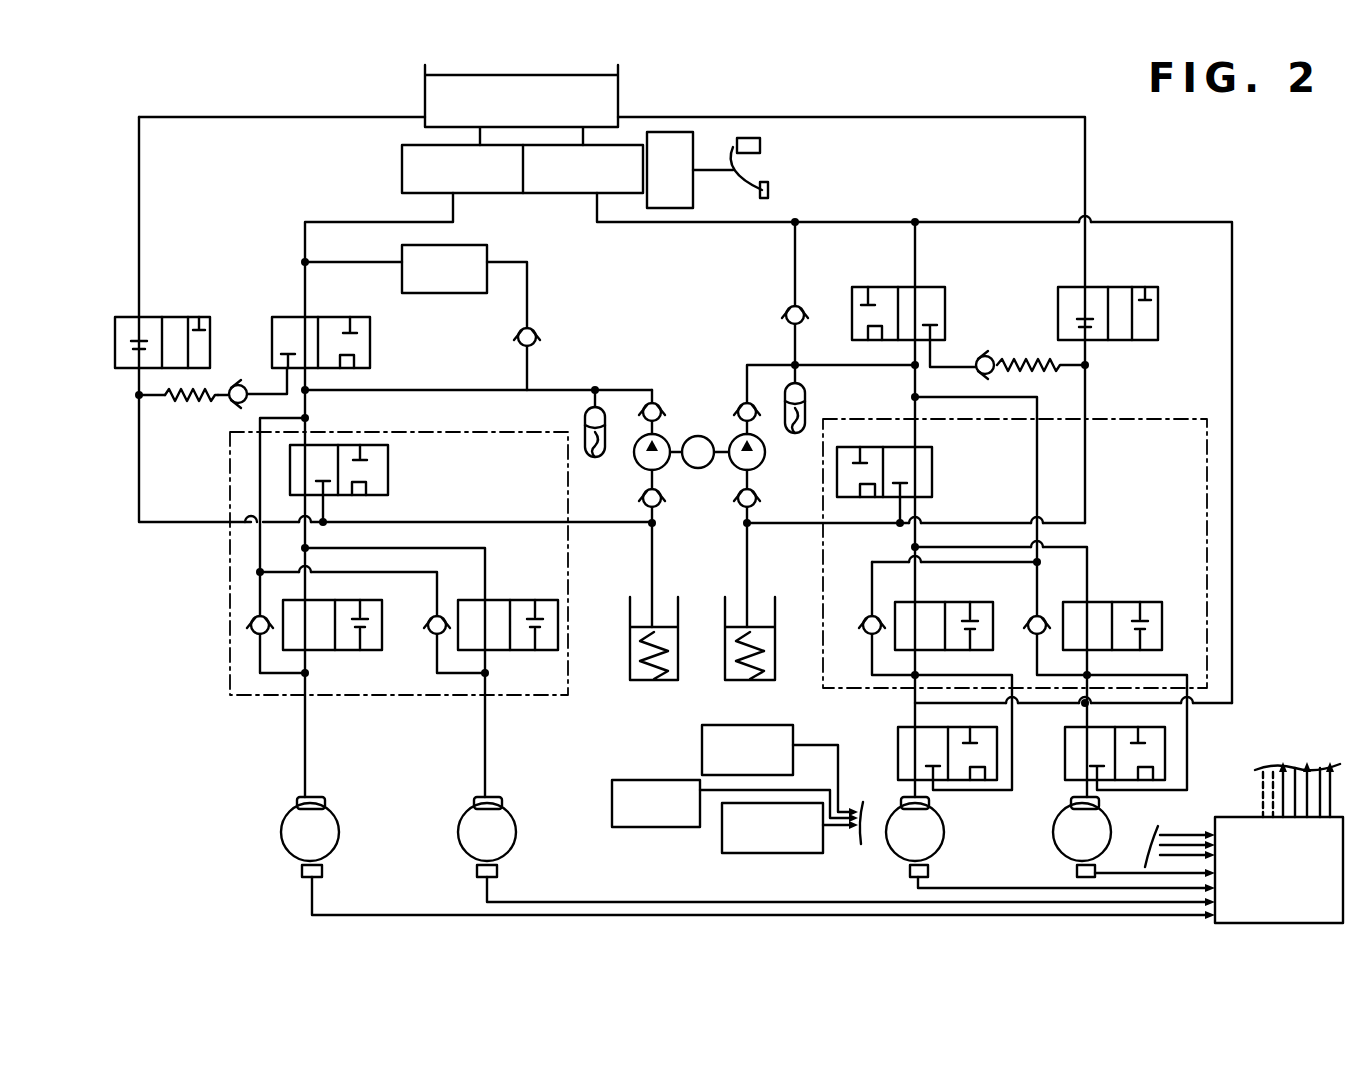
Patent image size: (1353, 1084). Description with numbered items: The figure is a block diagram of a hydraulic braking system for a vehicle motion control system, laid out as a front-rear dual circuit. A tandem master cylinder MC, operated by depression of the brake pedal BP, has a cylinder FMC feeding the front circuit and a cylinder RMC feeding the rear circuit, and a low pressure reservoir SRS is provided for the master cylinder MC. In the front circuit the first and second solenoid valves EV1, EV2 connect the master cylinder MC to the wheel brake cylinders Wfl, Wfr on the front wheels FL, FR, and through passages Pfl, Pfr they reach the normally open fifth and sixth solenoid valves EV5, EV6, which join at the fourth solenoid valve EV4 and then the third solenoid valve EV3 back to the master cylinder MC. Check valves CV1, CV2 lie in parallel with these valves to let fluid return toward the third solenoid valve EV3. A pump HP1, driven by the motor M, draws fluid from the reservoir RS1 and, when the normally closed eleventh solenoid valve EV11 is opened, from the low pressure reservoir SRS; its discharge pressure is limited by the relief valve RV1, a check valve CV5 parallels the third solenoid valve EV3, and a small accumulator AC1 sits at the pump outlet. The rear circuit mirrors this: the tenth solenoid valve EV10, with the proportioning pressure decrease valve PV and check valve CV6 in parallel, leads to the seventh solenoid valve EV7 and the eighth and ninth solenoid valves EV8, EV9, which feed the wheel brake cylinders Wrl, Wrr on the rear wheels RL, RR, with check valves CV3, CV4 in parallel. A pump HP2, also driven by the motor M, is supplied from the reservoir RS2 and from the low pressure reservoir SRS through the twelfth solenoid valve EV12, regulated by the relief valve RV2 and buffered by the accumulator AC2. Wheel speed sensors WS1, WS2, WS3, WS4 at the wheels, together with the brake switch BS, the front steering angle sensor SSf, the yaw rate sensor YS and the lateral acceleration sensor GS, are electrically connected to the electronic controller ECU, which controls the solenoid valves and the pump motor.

The low pressure reservoir SRS is at (521, 105).
The master cylinder MC is at (400, 164).
The cylinder RMC is at (475, 169).
The cylinder FMC is at (641, 170).
The brake switch BS is at (760, 146).
The brake pedal BP is at (768, 190).
The proportioning pressure decrease valve PV is at (444, 269).
The check valve CV6 is at (537, 333).
The twelfth solenoid valve EV12 is at (148, 317).
The tenth solenoid valve EV10 is at (370, 330).
The relief valve RV2 is at (240, 404).
The seventh solenoid valve EV7 is at (388, 470).
The accumulator AC2 is at (585, 412).
The pump HP2 is at (636, 462).
The motor M is at (698, 452).
The pump HP1 is at (764, 462).
The accumulator AC1 is at (805, 390).
The check valve CV5 is at (786, 310).
The third solenoid valve EV3 is at (930, 287).
The relief valve RV1 is at (990, 355).
The eleventh solenoid valve EV11 is at (1115, 287).
The fourth solenoid valve EV4 is at (932, 465).
The check valve CV1 is at (867, 618).
The check valve CV2 is at (1045, 615).
The fifth solenoid valve EV5 is at (925, 602).
The sixth solenoid valve EV6 is at (1128, 602).
The check valve CV3 is at (257, 617).
The eighth solenoid valve EV8 is at (322, 650).
The check valve CV4 is at (430, 634).
The ninth solenoid valve EV9 is at (488, 600).
The reservoir RS2 is at (645, 680).
The reservoir RS1 is at (740, 680).
The first solenoid valve EV1 is at (898, 748).
The second solenoid valve EV2 is at (1150, 727).
The passage Pfl is at (997, 760).
The passage Pfr is at (1260, 706).
The yaw rate sensor YS is at (780, 770).
The lateral acceleration sensor GS is at (735, 803).
The front steering angle sensor SSf is at (792, 827).
The wheel brake cylinder Wrl is at (334, 790).
The wheel RL is at (310, 832).
The wheel speed sensor WS3 is at (322, 870).
The wheel brake cylinder Wrr is at (502, 801).
The wheel RR is at (487, 832).
The wheel speed sensor WS4 is at (497, 870).
The wheel brake cylinder Wfl is at (901, 801).
The wheel FL is at (915, 832).
The wheel speed sensor WS1 is at (910, 871).
The wheel brake cylinder Wfr is at (1099, 803).
The wheel FR is at (1082, 832).
The wheel speed sensor WS2 is at (1077, 870).
The electronic controller ECU is at (1244, 842).